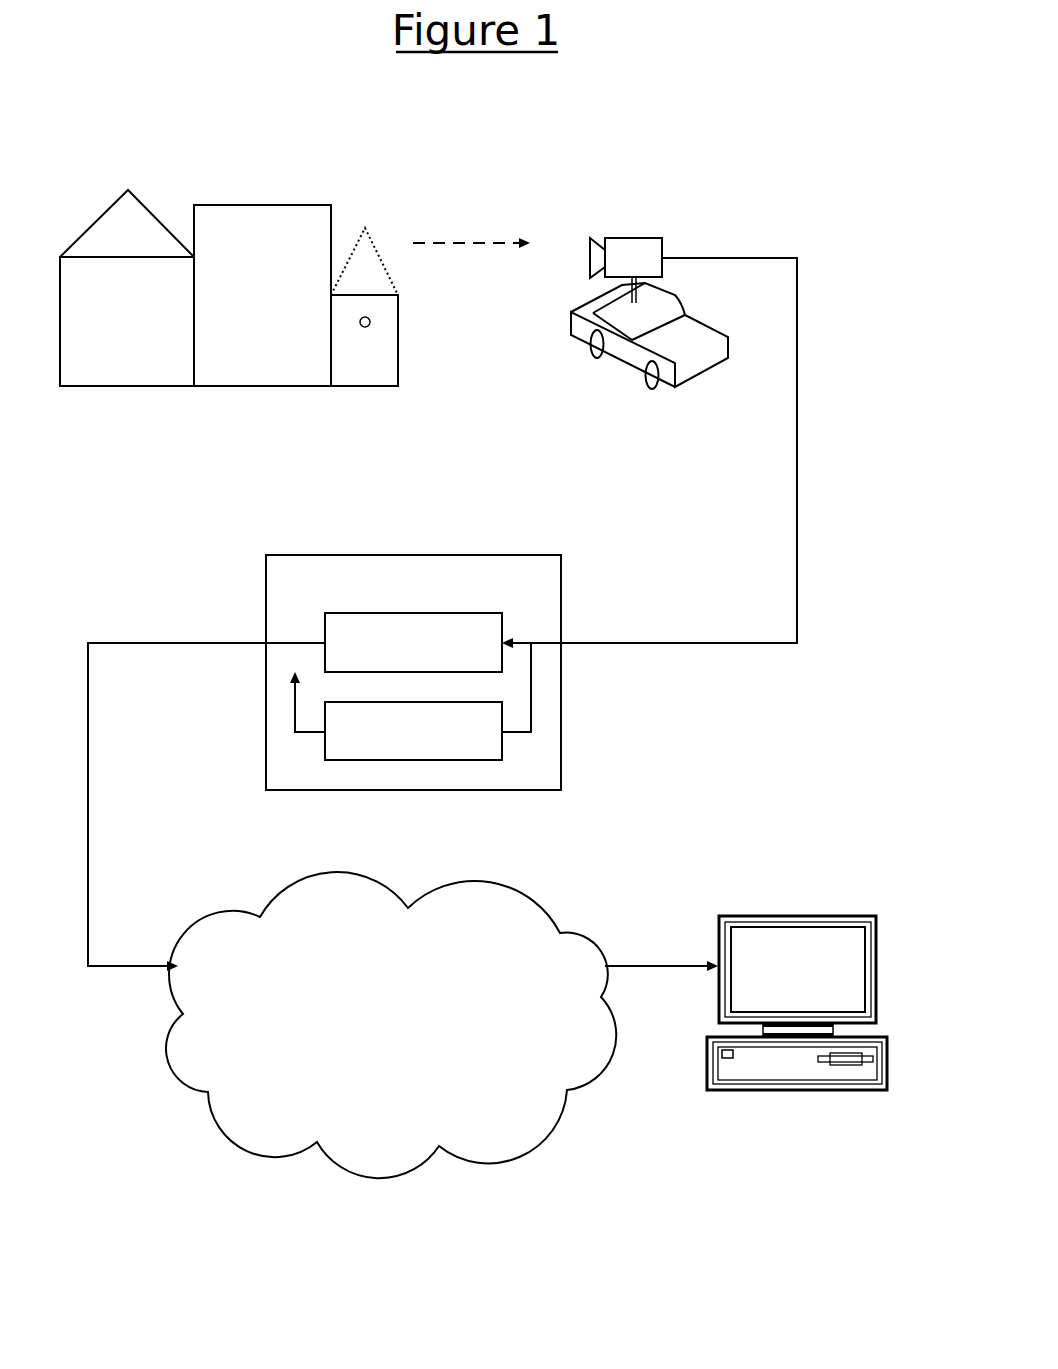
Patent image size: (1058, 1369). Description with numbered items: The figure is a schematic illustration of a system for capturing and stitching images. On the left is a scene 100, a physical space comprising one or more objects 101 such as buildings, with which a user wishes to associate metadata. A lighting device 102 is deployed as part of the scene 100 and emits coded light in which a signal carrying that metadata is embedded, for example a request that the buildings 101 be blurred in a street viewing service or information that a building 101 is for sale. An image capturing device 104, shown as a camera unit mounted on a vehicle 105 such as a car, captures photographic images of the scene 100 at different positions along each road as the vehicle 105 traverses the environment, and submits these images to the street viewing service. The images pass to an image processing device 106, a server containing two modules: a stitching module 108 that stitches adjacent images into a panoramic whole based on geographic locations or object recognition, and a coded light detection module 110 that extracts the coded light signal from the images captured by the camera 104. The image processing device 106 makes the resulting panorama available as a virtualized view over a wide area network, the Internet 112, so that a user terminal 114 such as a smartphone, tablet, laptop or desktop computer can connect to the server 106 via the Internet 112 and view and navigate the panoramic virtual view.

The scene 100 is at (203, 124).
The object 101 is at (248, 205).
The lighting device 102 is at (365, 328).
The image capturing device 104 is at (633, 238).
The vehicle 105 is at (580, 342).
The image processing device 106 is at (561, 592).
The stitching module 108 is at (440, 613).
The coded light detection module 110 is at (472, 760).
The Internet 112 is at (355, 1176).
The user terminal 114 is at (797, 916).